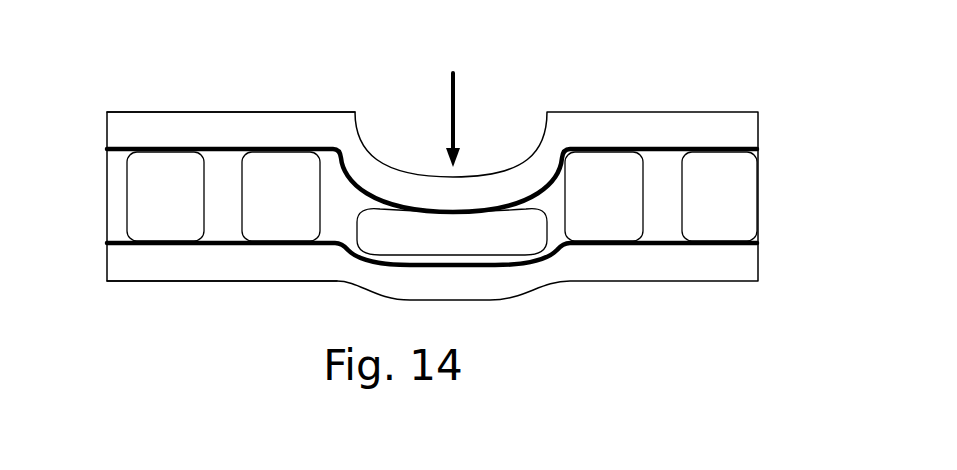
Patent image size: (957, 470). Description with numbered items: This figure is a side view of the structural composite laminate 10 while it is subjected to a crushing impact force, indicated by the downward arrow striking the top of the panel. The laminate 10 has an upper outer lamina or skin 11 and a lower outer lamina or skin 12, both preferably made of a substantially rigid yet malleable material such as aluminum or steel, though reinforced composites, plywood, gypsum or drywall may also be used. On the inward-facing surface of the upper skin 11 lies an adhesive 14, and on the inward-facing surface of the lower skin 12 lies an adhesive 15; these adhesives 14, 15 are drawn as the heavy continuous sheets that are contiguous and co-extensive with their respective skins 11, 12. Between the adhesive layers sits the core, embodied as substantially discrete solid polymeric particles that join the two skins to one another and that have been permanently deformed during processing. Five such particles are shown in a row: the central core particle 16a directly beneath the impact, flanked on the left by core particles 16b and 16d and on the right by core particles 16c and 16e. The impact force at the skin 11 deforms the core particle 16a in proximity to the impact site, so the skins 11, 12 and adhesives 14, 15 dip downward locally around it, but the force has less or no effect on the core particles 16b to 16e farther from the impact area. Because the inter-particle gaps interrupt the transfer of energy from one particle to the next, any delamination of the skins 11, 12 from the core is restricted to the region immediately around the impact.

The structural composite laminate 10 is at (200, 90).
The upper outer lamina 11 is at (127, 128).
The lower outer lamina 12 is at (127, 260).
The adhesive 14 is at (757, 149).
The adhesive 15 is at (757, 243).
The core particle 16a is at (433, 271).
The core particle 16b is at (280, 192).
The core particle 16c is at (623, 210).
The core particle 16d is at (145, 214).
The core particle 16e is at (702, 210).